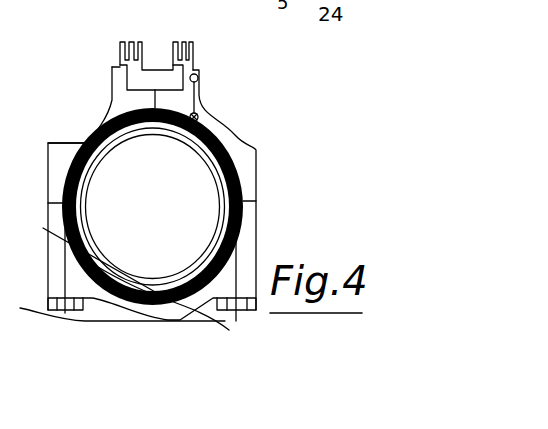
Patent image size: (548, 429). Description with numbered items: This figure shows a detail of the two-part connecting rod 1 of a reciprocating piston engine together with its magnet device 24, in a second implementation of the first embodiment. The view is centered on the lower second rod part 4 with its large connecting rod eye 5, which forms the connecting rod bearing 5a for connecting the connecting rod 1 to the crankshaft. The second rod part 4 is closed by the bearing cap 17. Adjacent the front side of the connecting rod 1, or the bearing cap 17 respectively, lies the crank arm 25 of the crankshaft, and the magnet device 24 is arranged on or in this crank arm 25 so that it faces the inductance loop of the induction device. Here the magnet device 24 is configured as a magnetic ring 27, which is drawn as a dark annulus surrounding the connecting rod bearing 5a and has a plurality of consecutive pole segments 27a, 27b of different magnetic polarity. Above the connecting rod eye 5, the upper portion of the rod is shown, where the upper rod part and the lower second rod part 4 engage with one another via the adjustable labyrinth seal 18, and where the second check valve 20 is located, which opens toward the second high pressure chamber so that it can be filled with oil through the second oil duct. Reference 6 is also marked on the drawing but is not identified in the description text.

The connecting rod 1 is at (168, 199).
The second rod part 4 is at (210, 110).
The large connecting rod eye 5 is at (188, 206).
The connecting rod bearing 5a is at (140, 135).
The electronics housing 6 is at (168, 54).
The bearing cap 17 is at (137, 312).
The labyrinth seal 18 is at (195, 50).
The second check valve 20 is at (198, 76).
The magnet device 24 is at (83, 145).
The crank arm 25 is at (107, 127).
The magnetic ring 27 is at (150, 275).
The pole segment 27a is at (258, 321).
The pole segment 27b is at (157, 293).